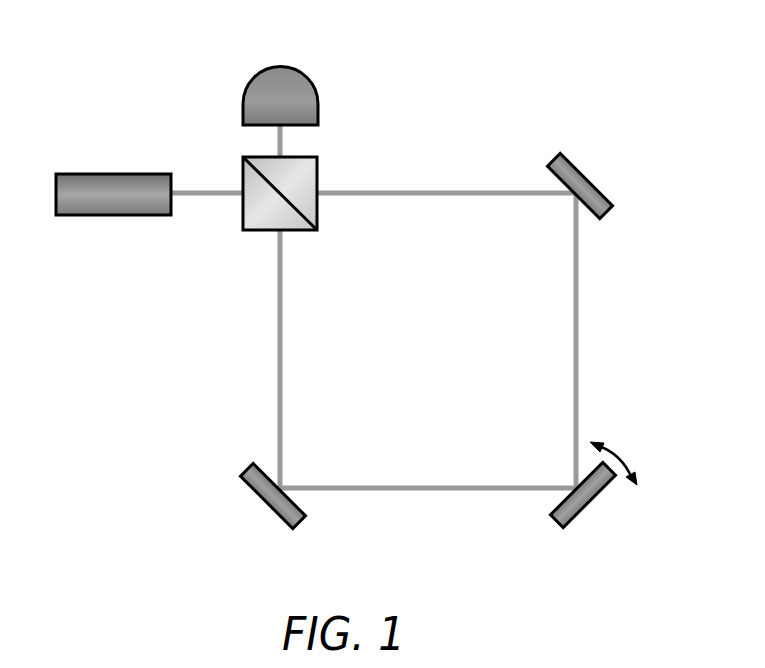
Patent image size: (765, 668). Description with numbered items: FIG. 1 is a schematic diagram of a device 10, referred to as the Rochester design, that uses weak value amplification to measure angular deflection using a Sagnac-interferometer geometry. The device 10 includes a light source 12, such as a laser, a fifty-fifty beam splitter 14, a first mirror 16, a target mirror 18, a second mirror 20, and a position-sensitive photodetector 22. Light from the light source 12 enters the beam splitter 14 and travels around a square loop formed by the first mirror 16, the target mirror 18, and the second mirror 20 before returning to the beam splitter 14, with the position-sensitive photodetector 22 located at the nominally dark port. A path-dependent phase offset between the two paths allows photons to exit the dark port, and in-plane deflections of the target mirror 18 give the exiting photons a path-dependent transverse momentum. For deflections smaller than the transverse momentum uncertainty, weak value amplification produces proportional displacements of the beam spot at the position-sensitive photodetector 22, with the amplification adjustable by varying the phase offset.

The device 10 is at (483, 82).
The light source 12 is at (110, 174).
The 50/50 beam splitter 14 is at (243, 230).
The first mirror 16 is at (252, 495).
The target mirror 18 is at (590, 503).
The second mirror 20 is at (593, 183).
The position-sensitive photodetector 22 is at (258, 72).